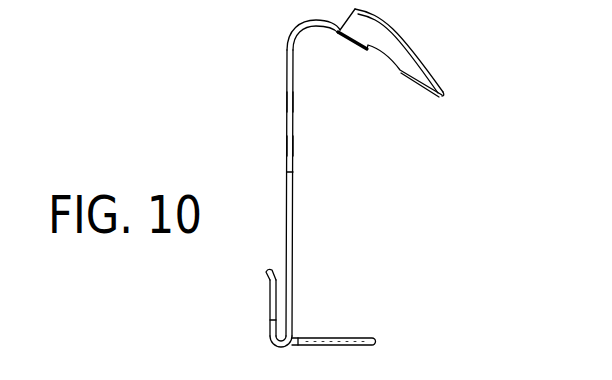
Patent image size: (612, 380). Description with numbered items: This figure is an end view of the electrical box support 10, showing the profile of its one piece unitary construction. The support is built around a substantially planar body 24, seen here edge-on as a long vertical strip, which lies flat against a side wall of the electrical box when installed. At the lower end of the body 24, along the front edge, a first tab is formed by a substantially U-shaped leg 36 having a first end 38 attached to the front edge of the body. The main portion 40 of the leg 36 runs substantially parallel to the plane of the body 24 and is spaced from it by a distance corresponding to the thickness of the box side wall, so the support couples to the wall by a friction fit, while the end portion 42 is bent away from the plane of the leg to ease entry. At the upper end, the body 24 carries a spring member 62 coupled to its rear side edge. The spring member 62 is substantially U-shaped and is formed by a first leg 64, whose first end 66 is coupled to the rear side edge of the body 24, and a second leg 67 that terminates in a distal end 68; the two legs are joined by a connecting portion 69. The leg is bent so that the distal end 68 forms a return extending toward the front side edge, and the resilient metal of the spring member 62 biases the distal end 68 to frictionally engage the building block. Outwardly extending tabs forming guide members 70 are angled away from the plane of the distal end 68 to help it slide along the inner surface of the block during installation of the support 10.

The electrical box support 10 is at (186, 157).
The body 24 is at (293, 214).
The leg 36 is at (281, 348).
The first end 38 is at (289, 348).
The main portion 40 is at (270, 309).
The end portion 42 is at (266, 274).
The spring member 62 is at (281, 102).
The first leg 64 is at (287, 147).
The first end 66 is at (293, 178).
The second leg 67 is at (358, 48).
The distal end 68 is at (443, 96).
The connecting portion 69 is at (299, 24).
The guide member 70 is at (381, 10).